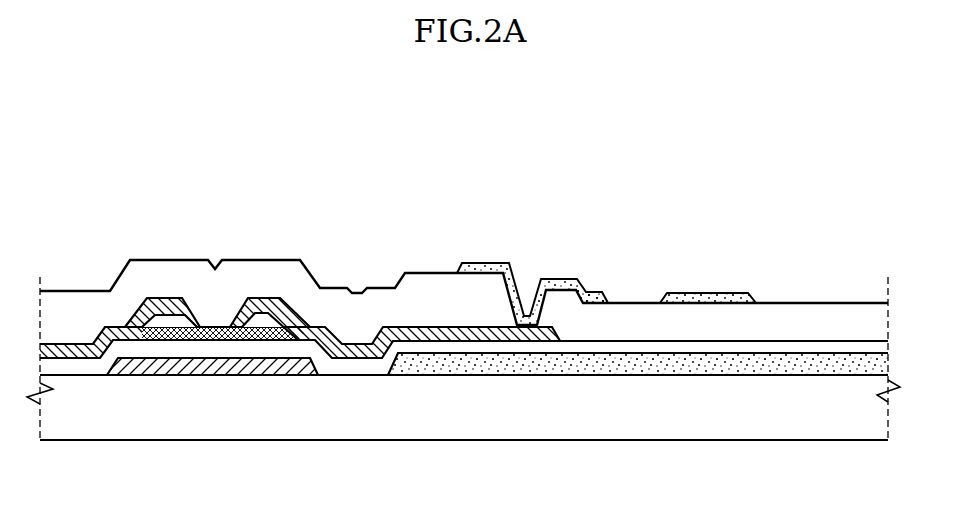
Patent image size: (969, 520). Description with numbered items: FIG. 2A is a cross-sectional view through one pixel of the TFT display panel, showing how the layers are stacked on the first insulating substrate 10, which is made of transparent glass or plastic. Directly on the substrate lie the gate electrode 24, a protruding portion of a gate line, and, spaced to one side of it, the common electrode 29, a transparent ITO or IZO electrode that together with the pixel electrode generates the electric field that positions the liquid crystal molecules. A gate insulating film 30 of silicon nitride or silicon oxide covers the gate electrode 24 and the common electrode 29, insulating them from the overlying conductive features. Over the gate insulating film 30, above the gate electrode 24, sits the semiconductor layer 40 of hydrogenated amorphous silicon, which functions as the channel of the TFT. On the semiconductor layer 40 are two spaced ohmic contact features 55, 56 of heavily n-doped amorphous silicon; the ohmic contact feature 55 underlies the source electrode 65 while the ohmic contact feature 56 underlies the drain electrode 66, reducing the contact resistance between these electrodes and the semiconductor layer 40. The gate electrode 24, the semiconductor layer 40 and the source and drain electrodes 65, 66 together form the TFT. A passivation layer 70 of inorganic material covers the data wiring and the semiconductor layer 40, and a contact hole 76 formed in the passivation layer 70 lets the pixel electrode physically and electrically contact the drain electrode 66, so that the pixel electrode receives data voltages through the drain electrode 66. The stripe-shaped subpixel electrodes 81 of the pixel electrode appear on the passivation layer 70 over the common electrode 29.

The first insulating substrate 10 is at (673, 408).
The gate electrode 24 is at (293, 362).
The common electrode 29 is at (541, 363).
The gate insulating film 30 is at (357, 350).
The semiconductor layer 40 is at (175, 340).
The ohmic contact feature 55 is at (167, 318).
The ohmic contact feature 56 is at (253, 318).
The source electrode 65 is at (162, 298).
The drain electrode 66 is at (257, 298).
The passivation layer 70 is at (422, 286).
The contact hole 76 is at (533, 251).
The subpixel electrode 81 is at (593, 293).